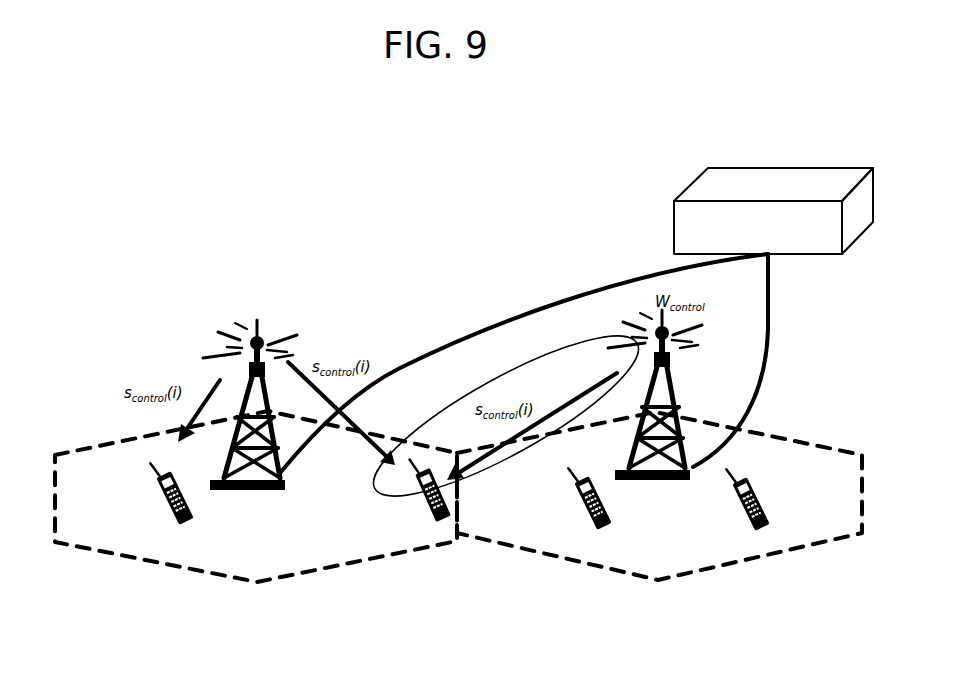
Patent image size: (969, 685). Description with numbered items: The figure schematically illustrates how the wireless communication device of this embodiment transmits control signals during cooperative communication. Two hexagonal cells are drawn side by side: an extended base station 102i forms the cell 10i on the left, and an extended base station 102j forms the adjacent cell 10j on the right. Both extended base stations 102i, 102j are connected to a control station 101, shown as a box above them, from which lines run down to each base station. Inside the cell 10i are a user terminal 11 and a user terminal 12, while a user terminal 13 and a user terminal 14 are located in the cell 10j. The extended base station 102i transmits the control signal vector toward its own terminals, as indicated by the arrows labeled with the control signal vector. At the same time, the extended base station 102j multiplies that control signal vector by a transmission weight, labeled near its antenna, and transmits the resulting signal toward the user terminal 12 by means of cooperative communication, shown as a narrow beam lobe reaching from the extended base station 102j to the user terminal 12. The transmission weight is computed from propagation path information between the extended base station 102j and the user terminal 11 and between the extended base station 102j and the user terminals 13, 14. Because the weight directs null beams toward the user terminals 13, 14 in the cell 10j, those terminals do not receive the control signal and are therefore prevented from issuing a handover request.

The control station 101 is at (792, 168).
The extended base station 102i is at (256, 491).
The extended base station 102j is at (659, 480).
The cell 10i is at (300, 574).
The cell 10j is at (610, 570).
The user terminal 11 is at (163, 492).
The user terminal 12 is at (418, 505).
The user terminal 13 is at (578, 492).
The user terminal 14 is at (764, 505).